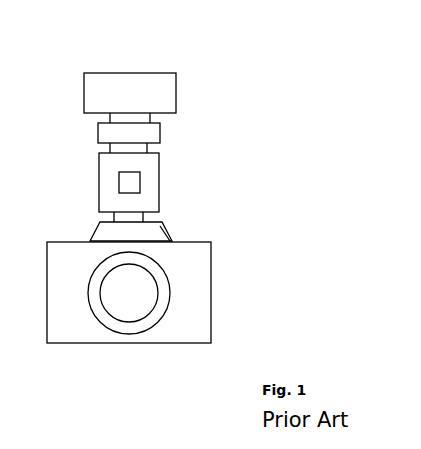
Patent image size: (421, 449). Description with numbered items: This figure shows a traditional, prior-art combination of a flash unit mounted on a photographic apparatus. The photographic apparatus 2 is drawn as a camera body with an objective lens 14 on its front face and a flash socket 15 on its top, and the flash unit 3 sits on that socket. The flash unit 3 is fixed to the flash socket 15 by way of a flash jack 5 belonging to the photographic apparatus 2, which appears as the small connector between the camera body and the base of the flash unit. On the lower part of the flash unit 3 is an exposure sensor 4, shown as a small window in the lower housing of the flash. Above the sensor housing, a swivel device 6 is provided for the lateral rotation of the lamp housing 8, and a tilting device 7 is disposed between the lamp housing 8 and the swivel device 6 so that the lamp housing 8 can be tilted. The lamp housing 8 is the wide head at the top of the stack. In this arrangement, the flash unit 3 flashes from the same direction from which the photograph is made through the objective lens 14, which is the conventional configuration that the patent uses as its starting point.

The photographic apparatus 2 is at (200, 255).
The flash unit 3 is at (236, 152).
The exposure sensor 4 is at (120, 179).
The flash jack 5 is at (143, 219).
The swivel device 6 is at (145, 148).
The tilting device 7 is at (159, 130).
The lamp housing 8 is at (163, 92).
The objective lens 14 is at (143, 295).
The flash socket 15 is at (163, 233).